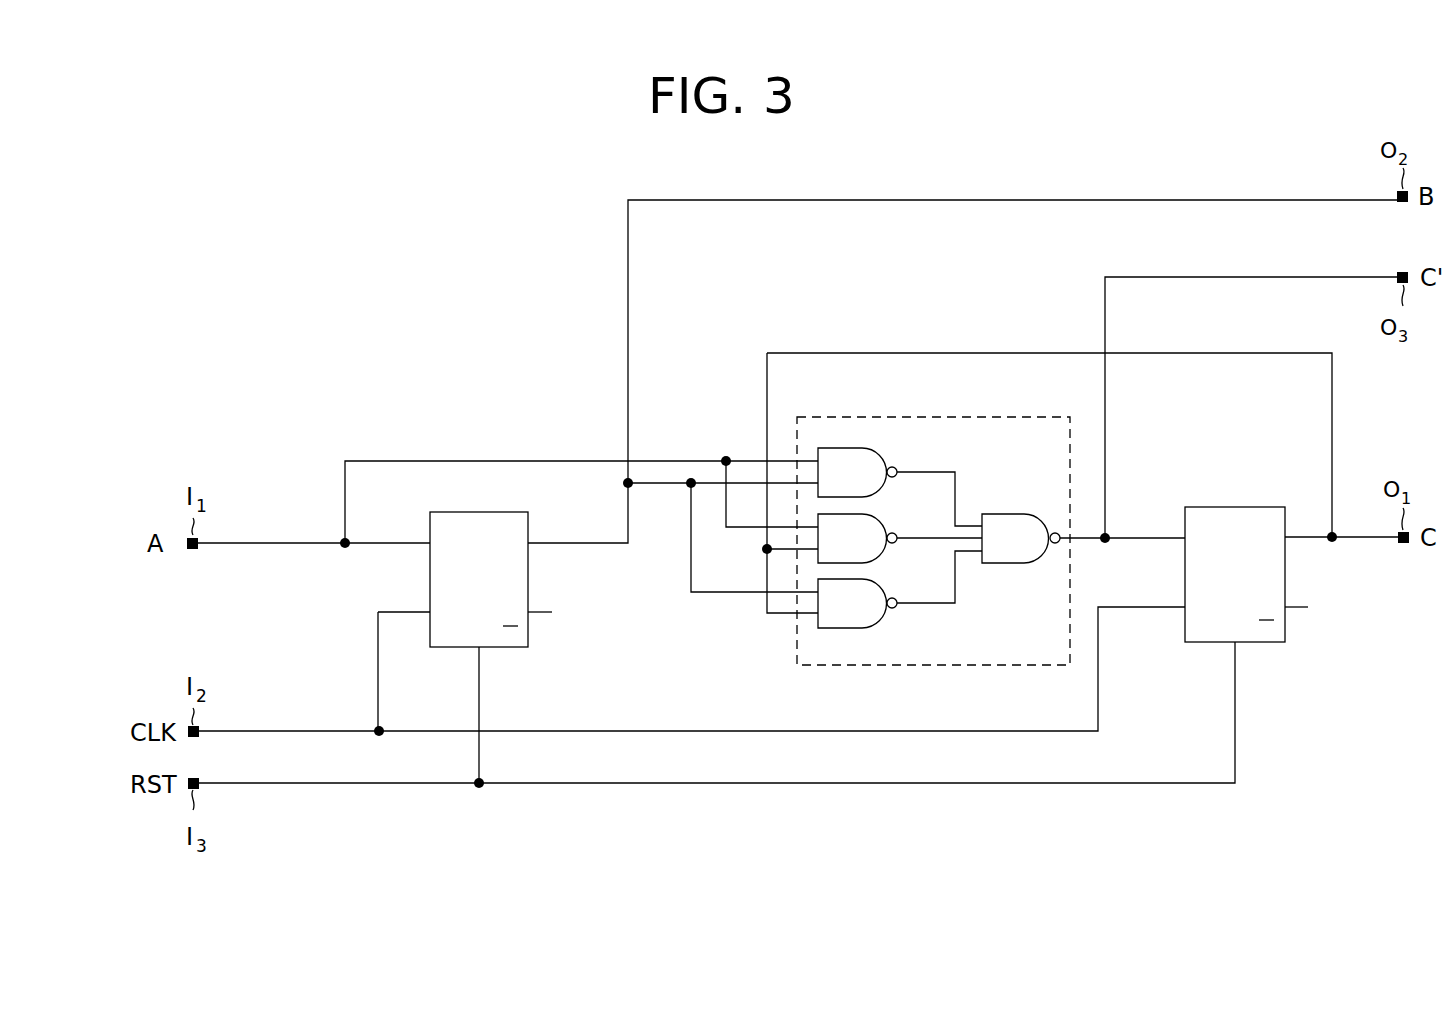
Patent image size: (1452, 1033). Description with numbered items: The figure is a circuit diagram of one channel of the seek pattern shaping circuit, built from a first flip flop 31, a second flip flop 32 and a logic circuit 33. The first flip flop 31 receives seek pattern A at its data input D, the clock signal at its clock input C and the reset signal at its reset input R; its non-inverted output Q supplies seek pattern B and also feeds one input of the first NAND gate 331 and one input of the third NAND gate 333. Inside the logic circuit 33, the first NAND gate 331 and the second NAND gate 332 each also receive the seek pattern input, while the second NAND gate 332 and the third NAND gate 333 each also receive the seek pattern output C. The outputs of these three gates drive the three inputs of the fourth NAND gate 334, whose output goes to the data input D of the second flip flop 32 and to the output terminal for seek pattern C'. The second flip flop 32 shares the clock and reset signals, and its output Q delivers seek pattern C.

The first flip flop 31 is at (487, 512).
The second flip flop 32 is at (1237, 507).
The logic circuit 33 is at (955, 418).
The first NAND gate 331 is at (862, 450).
The second NAND gate 332 is at (862, 563).
The third NAND gate 333 is at (862, 628).
The fourth NAND gate 334 is at (1005, 563).